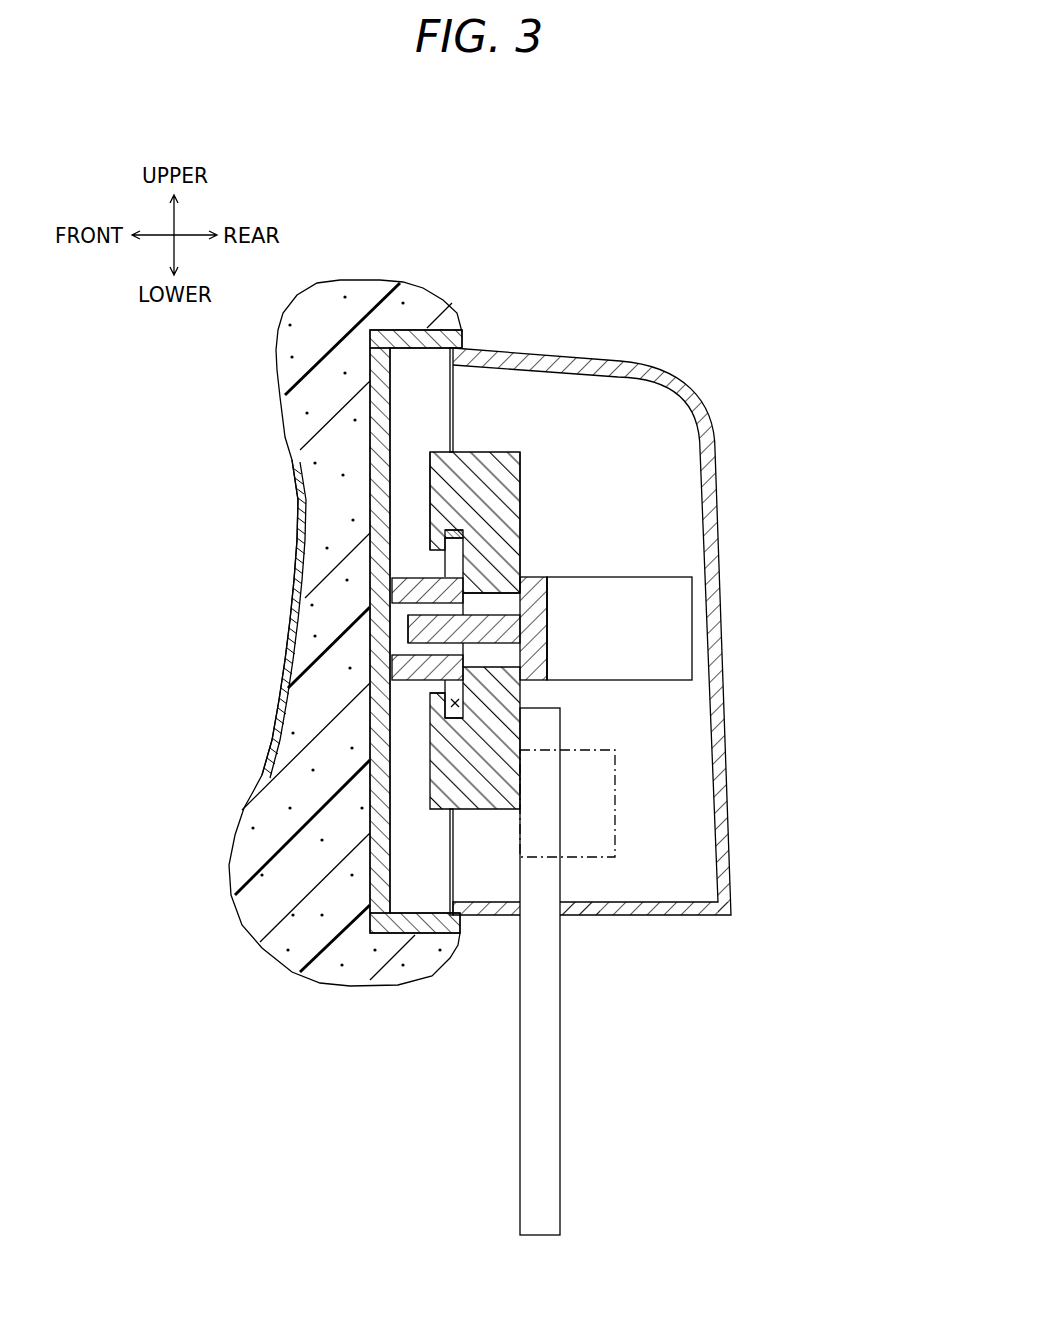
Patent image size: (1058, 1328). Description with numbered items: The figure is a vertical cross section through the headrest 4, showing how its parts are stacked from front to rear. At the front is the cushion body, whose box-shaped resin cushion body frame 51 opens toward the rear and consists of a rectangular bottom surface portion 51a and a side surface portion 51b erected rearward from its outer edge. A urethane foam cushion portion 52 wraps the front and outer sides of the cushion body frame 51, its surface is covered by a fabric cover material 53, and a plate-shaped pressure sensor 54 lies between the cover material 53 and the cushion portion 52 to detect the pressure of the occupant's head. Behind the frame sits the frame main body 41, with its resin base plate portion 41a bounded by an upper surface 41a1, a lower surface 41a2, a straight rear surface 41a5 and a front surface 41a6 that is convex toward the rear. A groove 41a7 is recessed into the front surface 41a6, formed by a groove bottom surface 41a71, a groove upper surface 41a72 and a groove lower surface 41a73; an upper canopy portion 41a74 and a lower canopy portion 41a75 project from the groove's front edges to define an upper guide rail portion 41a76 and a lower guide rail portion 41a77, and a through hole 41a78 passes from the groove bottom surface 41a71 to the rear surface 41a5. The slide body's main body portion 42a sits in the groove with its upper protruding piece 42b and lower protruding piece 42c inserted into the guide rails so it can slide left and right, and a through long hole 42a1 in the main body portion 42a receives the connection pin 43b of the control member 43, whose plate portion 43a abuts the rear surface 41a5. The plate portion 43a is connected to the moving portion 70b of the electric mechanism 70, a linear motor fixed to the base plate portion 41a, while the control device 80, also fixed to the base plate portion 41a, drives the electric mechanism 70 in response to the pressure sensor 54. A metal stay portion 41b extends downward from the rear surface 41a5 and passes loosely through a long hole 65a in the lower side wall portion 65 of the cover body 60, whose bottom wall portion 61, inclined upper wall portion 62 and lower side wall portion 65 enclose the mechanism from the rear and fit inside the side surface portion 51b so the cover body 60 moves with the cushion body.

The headrest 4 is at (766, 250).
The frame main body 41 is at (524, 764).
The base plate portion 41a is at (390, 474).
The upper surface 41a1 is at (487, 450).
The lower surface 41a2 is at (486, 809).
The rear surface 41a5 is at (520, 507).
The front surface 41a6 is at (430, 478).
The groove 41a7 is at (524, 626).
The groove bottom surface 41a71 is at (522, 567).
The groove upper surface 41a72 is at (455, 557).
The groove lower surface 41a73 is at (465, 710).
The upper canopy portion 41a74 is at (430, 546).
The lower canopy portion 41a75 is at (443, 688).
The upper guide rail portion 41a76 is at (445, 534).
The lower guide rail portion 41a77 is at (452, 703).
The through hole 41a78 is at (550, 606).
The stay portion 41b is at (560, 1118).
The main body portion 42a is at (410, 628).
The through long hole 42a1 is at (430, 648).
The upper protruding piece 42b is at (392, 590).
The lower protruding piece 42c is at (392, 668).
The control member 43 is at (679, 646).
The plate portion 43a is at (550, 680).
The connection pin 43b is at (550, 661).
The cushion body frame 51 is at (440, 935).
The bottom surface portion 51a is at (372, 398).
The side surface portion 51b is at (420, 328).
The cushion portion 52 is at (255, 845).
The cover material 53 is at (325, 985).
The pressure sensor 54 is at (292, 600).
The cover body 60 is at (658, 648).
The bottom wall portion 61 is at (729, 772).
The upper wall portion 62 is at (585, 360).
The lower side wall portion 65 is at (655, 915).
The long hole 65a is at (565, 916).
The electric mechanism 70 is at (692, 635).
The moving portion 70b is at (545, 638).
The control device 80 is at (615, 798).